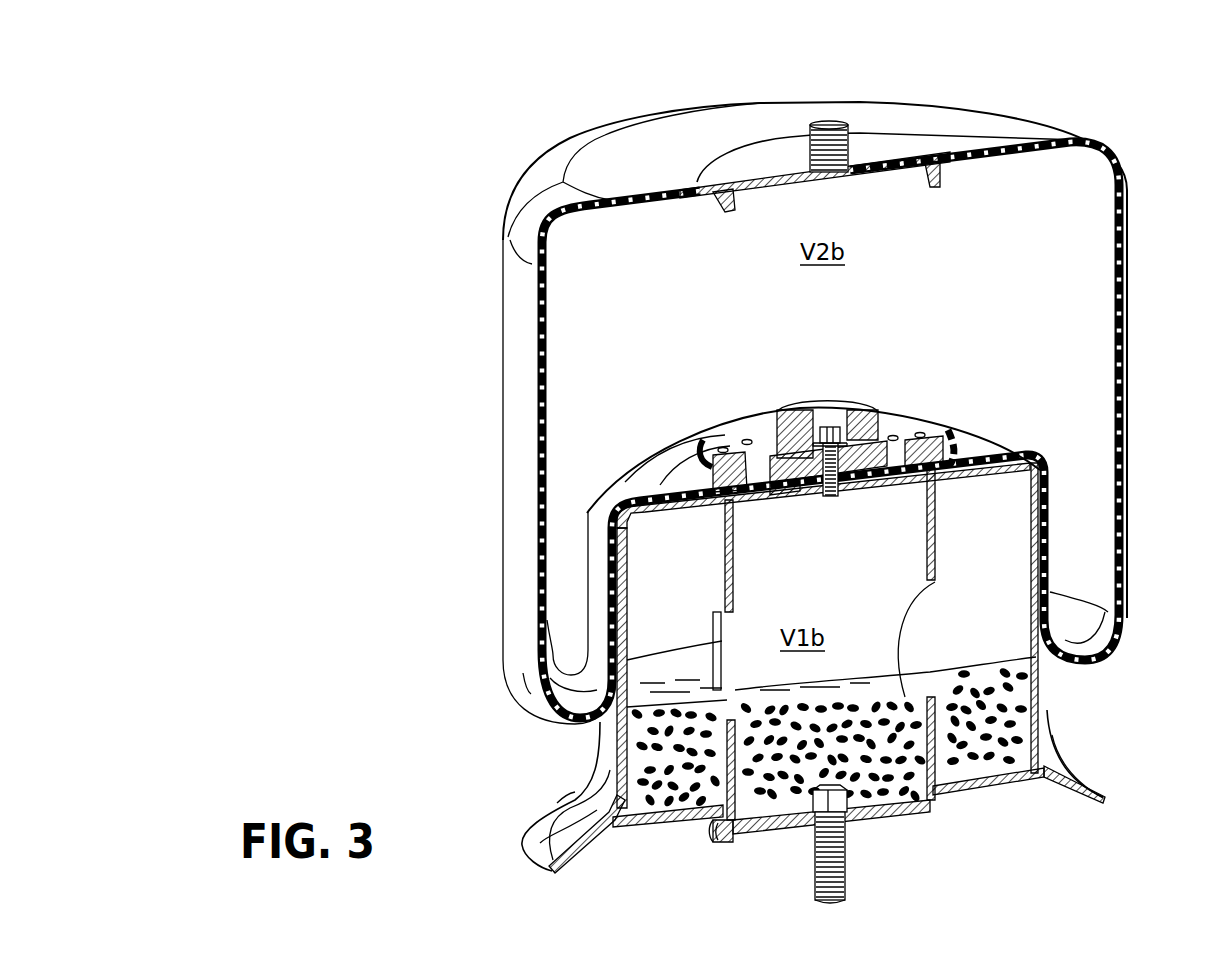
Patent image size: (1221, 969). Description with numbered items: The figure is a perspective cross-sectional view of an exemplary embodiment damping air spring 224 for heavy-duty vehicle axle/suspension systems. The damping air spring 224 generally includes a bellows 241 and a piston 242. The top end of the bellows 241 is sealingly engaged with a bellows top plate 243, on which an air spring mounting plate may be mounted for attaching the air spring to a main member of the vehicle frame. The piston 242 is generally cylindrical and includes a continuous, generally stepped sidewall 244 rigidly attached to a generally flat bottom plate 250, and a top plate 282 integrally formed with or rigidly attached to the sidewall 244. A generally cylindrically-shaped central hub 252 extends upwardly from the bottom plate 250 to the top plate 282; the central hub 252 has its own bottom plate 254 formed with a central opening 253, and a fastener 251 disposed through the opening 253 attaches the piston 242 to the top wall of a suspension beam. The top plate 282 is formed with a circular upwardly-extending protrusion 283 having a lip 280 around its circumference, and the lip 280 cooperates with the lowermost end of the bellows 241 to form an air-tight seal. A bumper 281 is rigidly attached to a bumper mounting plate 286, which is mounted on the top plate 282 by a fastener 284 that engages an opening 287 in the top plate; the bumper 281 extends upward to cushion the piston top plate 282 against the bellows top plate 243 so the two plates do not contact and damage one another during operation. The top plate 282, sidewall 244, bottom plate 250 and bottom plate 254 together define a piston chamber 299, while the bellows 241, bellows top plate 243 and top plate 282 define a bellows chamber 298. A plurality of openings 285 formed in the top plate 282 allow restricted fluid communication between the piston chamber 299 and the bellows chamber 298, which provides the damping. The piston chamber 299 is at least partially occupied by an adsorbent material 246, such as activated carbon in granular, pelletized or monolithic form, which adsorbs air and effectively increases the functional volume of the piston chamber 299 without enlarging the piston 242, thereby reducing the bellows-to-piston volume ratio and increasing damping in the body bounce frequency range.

The damping air spring 224 is at (516, 106).
The bellows 241 is at (1123, 212).
The piston 242 is at (1018, 797).
The bellows top plate 243 is at (797, 152).
The sidewall 244 is at (1048, 752).
The adsorbent material 246 is at (993, 723).
The bottom plate 250 is at (970, 795).
The fastener 251 is at (830, 900).
The central hub 252 is at (727, 762).
The central opening 253 is at (815, 858).
The bottom plate 254 is at (765, 838).
The lip 280 is at (690, 482).
The bumper 281 is at (850, 405).
The top plate 282 is at (745, 440).
The protrusion 283 is at (697, 437).
The fastener 284 is at (790, 482).
The openings 285 is at (720, 448).
The bumper mounting plate 286 is at (853, 447).
The opening 287 is at (790, 485).
The bellows chamber 298 is at (546, 656).
The piston chamber 299 is at (637, 812).